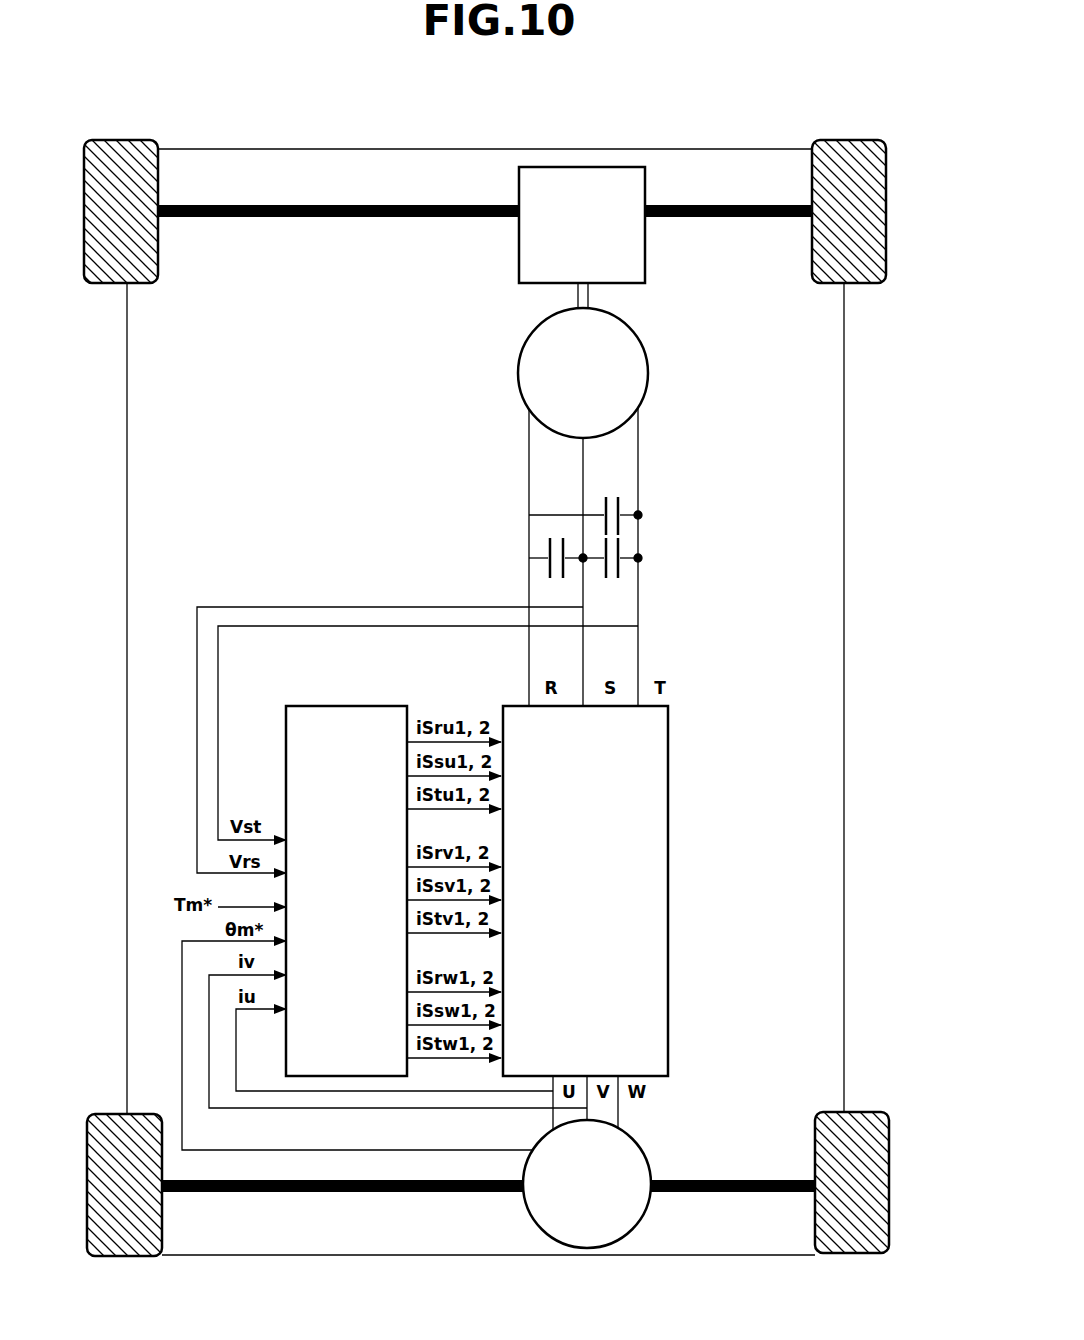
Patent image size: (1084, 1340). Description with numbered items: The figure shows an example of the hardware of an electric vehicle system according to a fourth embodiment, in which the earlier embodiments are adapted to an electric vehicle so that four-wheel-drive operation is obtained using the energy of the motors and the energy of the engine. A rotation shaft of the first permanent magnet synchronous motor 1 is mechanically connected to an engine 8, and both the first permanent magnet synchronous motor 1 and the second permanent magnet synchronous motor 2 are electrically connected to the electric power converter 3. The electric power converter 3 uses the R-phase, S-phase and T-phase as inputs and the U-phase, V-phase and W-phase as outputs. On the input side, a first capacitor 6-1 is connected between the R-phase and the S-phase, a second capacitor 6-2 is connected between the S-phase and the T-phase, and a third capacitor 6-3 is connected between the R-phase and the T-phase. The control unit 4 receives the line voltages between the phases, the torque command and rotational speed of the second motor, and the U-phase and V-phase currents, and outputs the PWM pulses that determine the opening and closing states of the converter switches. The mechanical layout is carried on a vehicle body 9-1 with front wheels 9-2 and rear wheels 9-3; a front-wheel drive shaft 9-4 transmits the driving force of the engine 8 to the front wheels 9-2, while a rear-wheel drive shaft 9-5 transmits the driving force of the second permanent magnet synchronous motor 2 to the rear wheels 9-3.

The first permanent magnet synchronous motor 1 is at (634, 330).
The second permanent magnet synchronous motor 2 is at (645, 1142).
The electric power converter 3 is at (668, 741).
The control unit 4 is at (357, 706).
The first capacitor 6-1 is at (547, 547).
The second capacitor 6-2 is at (622, 548).
The third capacitor 6-3 is at (622, 502).
The engine 8 is at (645, 186).
The vehicle body 9-1 is at (844, 331).
The front wheels 9-2 is at (865, 162).
The rear wheels 9-3 is at (868, 1135).
The front-wheel drive shaft 9-4 is at (327, 217).
The rear-wheel drive shaft 9-5 is at (720, 1177).